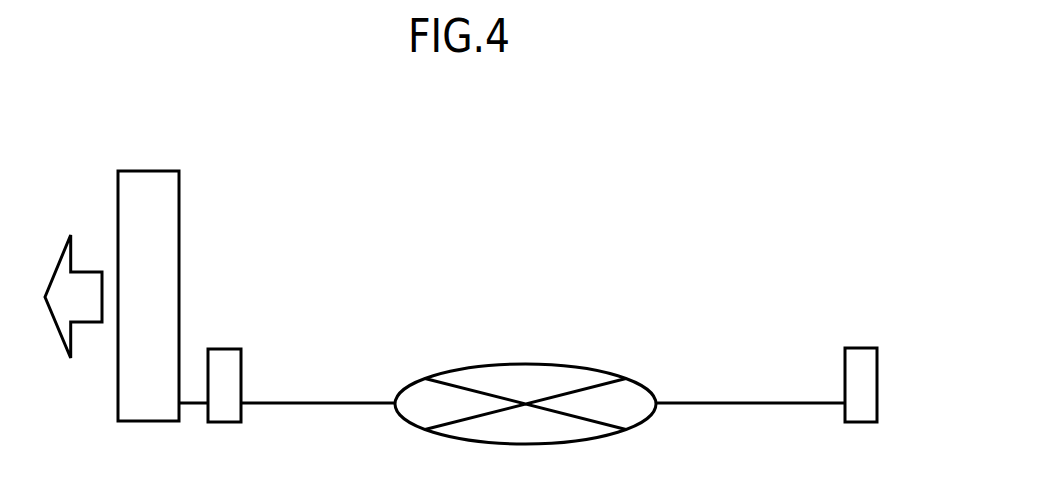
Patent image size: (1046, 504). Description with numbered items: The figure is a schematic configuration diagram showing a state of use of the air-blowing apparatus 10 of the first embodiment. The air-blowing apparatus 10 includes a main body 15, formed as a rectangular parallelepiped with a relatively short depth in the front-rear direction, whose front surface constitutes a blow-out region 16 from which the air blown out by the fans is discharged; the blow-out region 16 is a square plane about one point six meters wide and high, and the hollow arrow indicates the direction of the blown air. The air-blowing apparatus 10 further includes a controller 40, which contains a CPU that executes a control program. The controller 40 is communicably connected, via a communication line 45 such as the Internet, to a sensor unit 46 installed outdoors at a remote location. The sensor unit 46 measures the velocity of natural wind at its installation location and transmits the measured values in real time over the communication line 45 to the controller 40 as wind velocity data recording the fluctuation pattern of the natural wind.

The air-blowing apparatus 10 is at (222, 175).
The main body 15 is at (149, 171).
The blow-out region 16 is at (118, 190).
The controller 40 is at (241, 370).
The communication line 45 is at (522, 364).
The sensor unit 46 is at (845, 370).